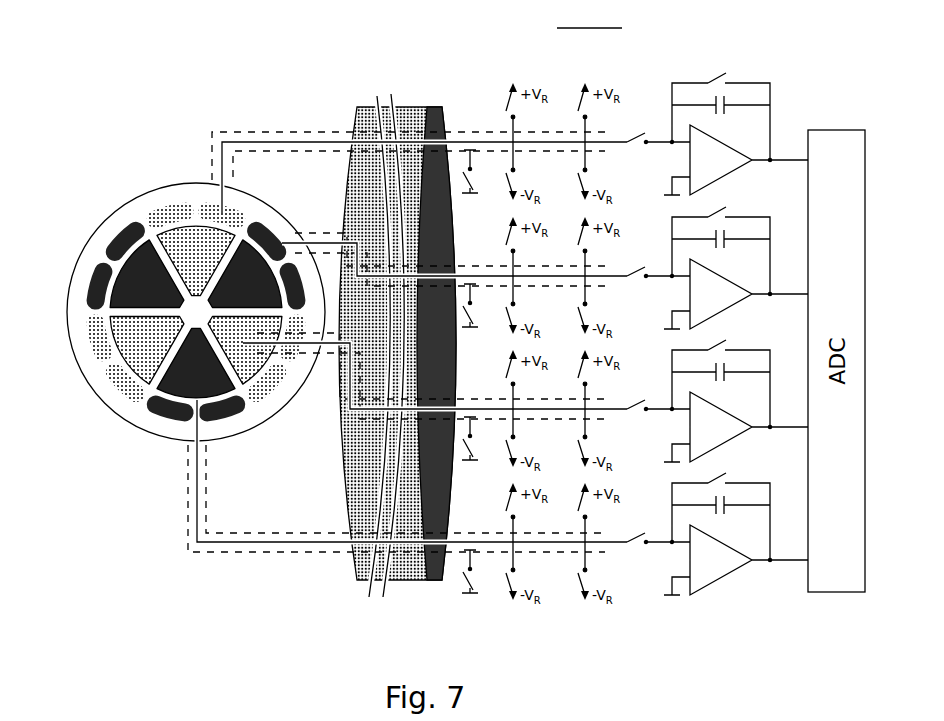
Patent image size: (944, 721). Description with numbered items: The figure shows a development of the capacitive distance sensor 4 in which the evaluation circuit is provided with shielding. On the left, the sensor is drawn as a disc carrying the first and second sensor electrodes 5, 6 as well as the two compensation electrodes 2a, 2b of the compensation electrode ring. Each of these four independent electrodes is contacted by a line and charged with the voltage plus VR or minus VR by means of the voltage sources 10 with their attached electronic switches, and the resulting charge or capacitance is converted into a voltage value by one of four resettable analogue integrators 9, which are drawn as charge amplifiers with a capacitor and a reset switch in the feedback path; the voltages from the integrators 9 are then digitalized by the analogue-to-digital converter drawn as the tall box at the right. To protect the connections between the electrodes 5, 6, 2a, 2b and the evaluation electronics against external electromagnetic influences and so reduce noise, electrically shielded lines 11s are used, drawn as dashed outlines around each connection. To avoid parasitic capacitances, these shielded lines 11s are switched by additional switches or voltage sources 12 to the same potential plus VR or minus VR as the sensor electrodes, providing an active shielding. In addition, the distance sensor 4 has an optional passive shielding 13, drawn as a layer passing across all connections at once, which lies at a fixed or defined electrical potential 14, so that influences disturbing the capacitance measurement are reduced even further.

The capacitive distance sensor 4 is at (224, 69).
The first sensor electrode 5 is at (195, 230).
The second sensor electrode 6 is at (139, 257).
The compensation electrode 2a is at (154, 425).
The compensation electrode 2b is at (110, 397).
The passive shielding 13 is at (408, 112).
The fixed or defined electrical potential 14 is at (417, 592).
The electrically shielded lines 11s is at (540, 62).
The additional switches or voltage sources 12 is at (609, 30).
The voltage sources 10 is at (604, 68).
The resettable analogue integrators 9 is at (752, 64).